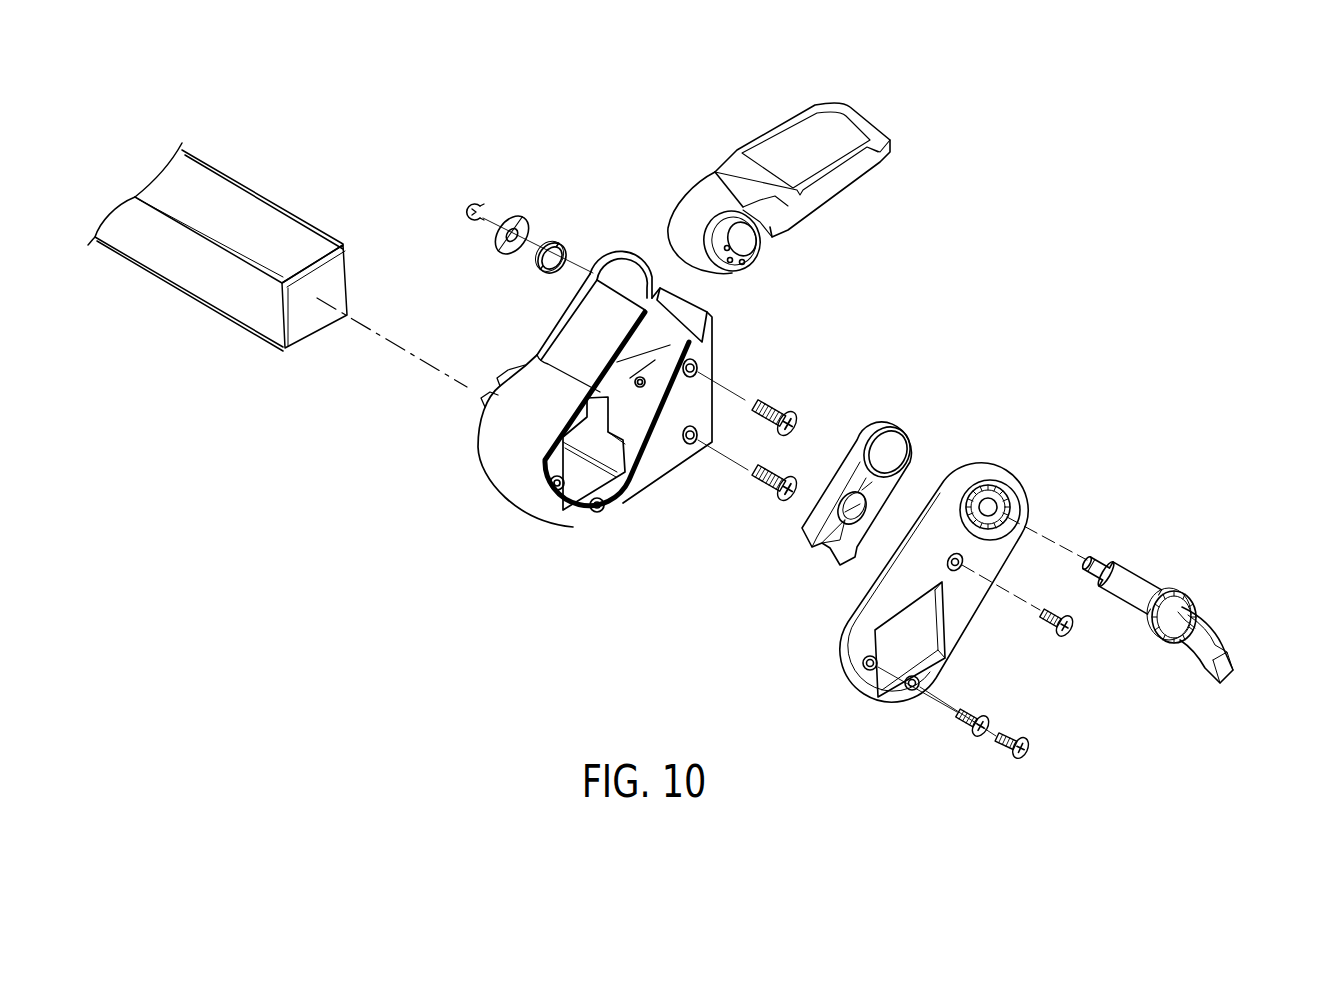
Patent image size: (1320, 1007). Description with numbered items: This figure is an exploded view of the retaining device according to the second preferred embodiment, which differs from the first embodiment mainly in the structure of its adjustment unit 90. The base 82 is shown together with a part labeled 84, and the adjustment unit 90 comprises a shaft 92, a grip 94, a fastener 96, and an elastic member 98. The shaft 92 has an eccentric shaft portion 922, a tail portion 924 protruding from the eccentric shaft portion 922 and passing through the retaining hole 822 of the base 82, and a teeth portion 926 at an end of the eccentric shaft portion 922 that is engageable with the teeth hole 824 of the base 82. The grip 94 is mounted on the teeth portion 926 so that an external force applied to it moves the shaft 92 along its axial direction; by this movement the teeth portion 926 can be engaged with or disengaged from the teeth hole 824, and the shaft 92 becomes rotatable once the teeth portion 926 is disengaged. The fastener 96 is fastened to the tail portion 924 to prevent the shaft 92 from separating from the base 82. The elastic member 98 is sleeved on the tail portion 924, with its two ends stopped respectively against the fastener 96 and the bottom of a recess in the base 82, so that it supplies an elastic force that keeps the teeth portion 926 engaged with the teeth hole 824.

The base 82 is at (592, 375).
The retaining hole 822 is at (630, 293).
The teeth hole 824 is at (992, 500).
The handle 84 is at (877, 115).
The adjustment unit 90 is at (1183, 608).
The shaft 92 is at (1170, 559).
The eccentric shaft portion 922 is at (1140, 590).
The tail portion 924 is at (1102, 560).
The teeth portion 926 is at (1201, 594).
The grip 94 is at (1217, 637).
The fastener 96 is at (473, 203).
The elastic member 98 is at (555, 242).